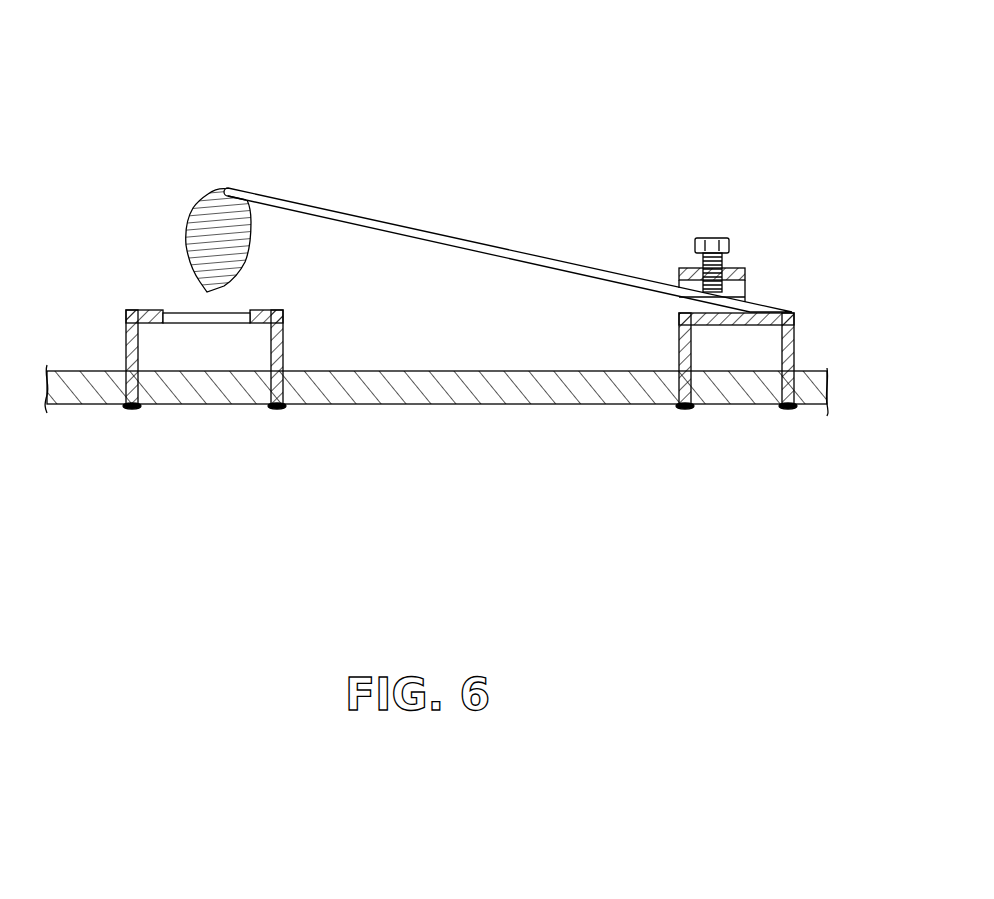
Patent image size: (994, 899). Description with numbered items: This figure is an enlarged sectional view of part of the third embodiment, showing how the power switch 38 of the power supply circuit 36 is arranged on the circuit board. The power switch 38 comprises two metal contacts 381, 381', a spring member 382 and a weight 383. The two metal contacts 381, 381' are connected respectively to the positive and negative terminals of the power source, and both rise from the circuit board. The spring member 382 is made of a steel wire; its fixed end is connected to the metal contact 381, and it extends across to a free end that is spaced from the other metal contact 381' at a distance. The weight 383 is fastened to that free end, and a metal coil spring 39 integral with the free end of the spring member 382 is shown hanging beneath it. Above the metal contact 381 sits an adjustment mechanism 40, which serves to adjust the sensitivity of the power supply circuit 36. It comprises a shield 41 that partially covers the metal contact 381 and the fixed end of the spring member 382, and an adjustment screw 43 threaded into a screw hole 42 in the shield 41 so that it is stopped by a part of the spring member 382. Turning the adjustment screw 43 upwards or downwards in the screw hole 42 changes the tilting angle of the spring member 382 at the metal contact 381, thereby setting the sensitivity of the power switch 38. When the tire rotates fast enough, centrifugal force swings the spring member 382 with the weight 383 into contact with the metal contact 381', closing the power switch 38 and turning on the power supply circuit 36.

The power supply circuit 36 is at (522, 108).
The power switch 38 is at (478, 222).
The metal contact 381 is at (772, 352).
The metal contact 381' is at (248, 352).
The spring member 382 is at (330, 210).
The weight 383 is at (203, 205).
The metal coil spring 39 is at (185, 232).
The adjustment mechanism 40 is at (772, 261).
The shield 41 is at (736, 281).
The screw hole 42 is at (729, 283).
The adjustment screw 43 is at (713, 238).